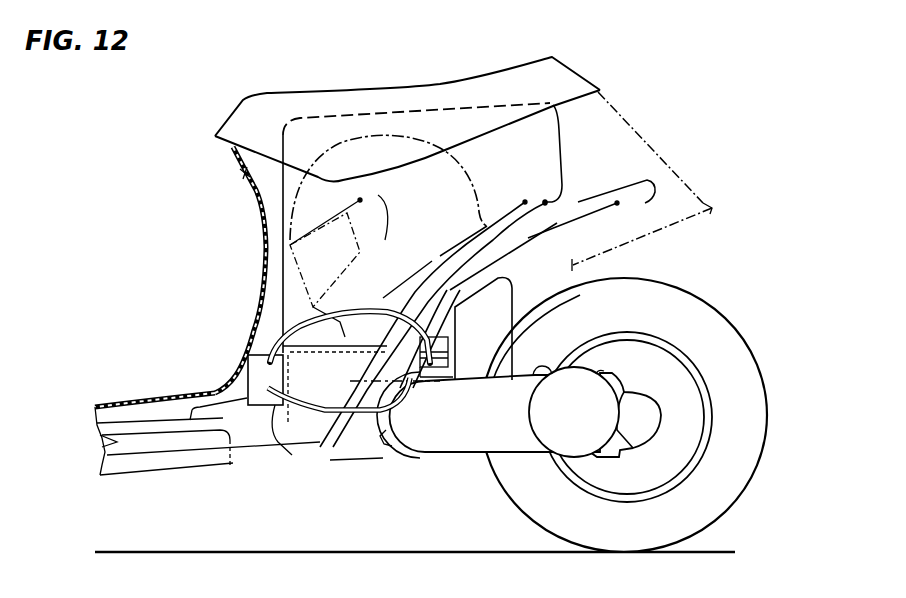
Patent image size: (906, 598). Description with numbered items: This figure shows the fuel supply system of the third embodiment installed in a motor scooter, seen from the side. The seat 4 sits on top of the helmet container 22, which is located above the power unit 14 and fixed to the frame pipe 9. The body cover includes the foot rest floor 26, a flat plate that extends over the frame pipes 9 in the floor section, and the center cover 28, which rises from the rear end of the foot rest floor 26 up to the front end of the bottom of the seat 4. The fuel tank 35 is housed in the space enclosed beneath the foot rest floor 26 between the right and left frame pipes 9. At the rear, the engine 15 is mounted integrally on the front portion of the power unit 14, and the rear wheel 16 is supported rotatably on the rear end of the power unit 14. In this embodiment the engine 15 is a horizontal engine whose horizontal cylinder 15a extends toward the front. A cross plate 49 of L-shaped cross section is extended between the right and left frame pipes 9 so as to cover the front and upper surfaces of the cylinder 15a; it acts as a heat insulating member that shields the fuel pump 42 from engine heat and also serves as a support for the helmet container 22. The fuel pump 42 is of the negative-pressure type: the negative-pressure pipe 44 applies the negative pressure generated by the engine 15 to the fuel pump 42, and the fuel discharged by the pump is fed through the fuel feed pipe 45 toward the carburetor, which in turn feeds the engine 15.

The seat 4 is at (278, 93).
The helmet container 22 is at (563, 150).
The center cover 28 is at (260, 230).
The foot rest floor 26 is at (152, 403).
The fuel tank 35 is at (152, 465).
The fuel pump 42 is at (230, 447).
The fuel feed pipe 45 is at (365, 313).
The frame pipe 9 is at (450, 293).
The cross plate 49 is at (290, 372).
The negative-pressure pipe 44 is at (313, 440).
The horizontal cylinder 15a is at (385, 455).
The power unit 14 is at (458, 440).
The engine 15 is at (410, 466).
The rear wheel 16 is at (753, 455).